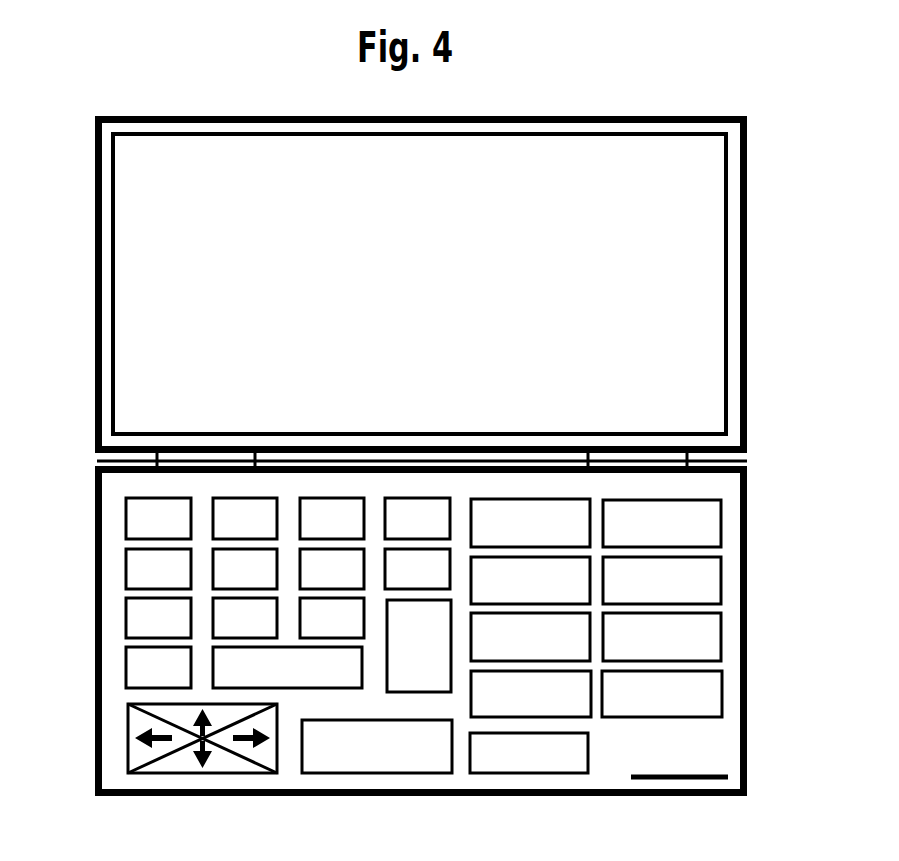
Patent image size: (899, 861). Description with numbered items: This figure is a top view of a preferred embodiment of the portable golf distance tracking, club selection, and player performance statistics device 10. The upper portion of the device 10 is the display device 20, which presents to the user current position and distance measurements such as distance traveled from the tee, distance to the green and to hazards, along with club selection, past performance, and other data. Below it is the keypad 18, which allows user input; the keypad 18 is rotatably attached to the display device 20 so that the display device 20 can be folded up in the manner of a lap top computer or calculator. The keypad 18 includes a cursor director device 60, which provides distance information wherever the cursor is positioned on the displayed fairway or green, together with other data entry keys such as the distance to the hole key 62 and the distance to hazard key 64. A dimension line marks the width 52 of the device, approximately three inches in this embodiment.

The golf distance tracking, club selection, and player performance statistics device 10 is at (82, 608).
The keypad 18 is at (400, 798).
The display device 20 is at (708, 191).
The width 52 is at (847, 466).
The cursor director device 60 is at (207, 777).
The distance to the hole key 62 is at (707, 518).
The distance to hazard key 64 is at (715, 567).